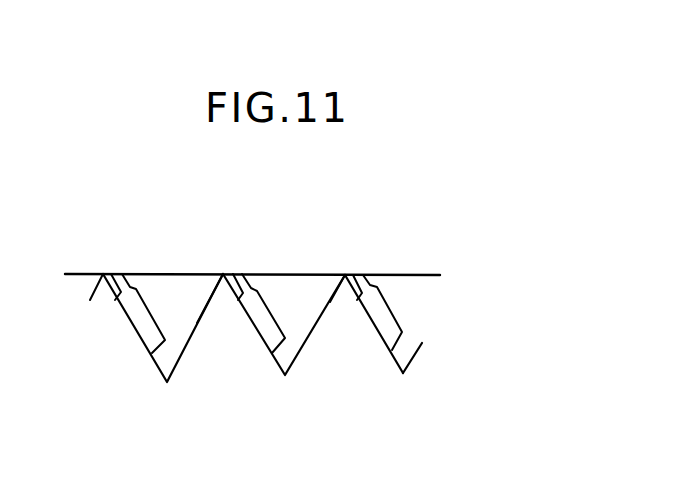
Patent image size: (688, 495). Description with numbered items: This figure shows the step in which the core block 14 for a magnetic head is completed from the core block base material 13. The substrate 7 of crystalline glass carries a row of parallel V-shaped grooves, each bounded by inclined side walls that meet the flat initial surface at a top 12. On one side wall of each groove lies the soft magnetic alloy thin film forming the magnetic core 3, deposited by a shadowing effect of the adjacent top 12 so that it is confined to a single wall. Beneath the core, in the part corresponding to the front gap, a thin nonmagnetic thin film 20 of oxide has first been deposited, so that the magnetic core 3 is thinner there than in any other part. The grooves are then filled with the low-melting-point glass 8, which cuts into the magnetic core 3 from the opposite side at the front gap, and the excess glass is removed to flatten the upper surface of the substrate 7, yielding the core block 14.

The magnetic core 3 is at (259, 333).
The substrate 7 is at (350, 332).
The low-melting-point glass 8 is at (303, 292).
The top 12 is at (217, 312).
The core block base material 13 is at (390, 377).
The core block 14 is at (448, 334).
The nonmagnetic thin film 20 is at (114, 299).